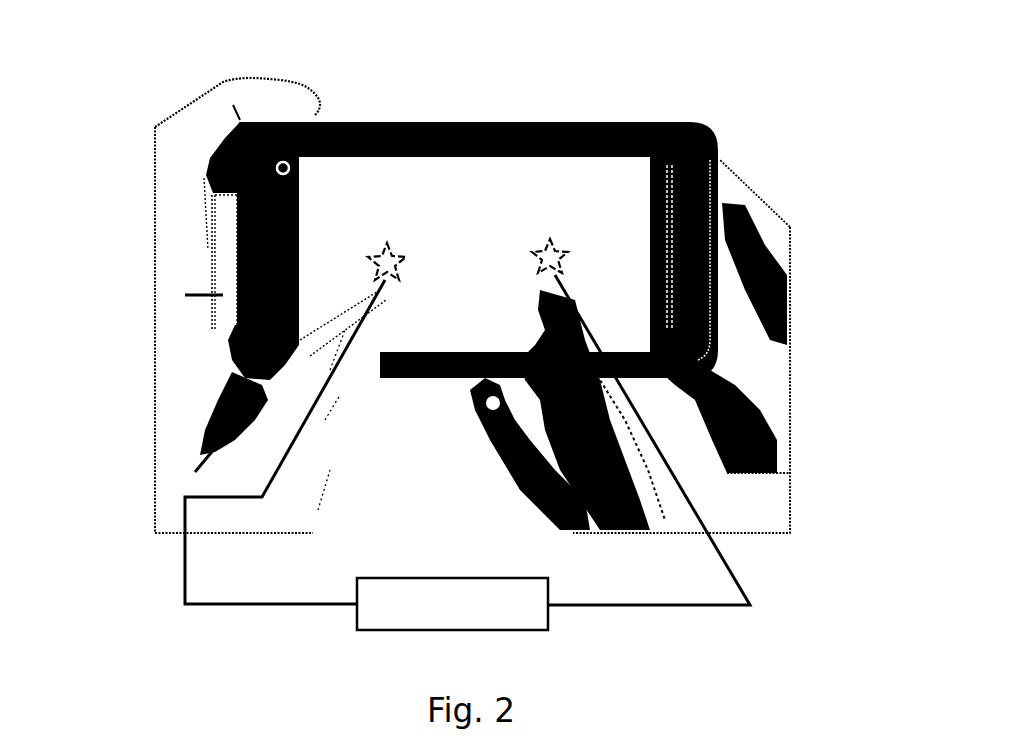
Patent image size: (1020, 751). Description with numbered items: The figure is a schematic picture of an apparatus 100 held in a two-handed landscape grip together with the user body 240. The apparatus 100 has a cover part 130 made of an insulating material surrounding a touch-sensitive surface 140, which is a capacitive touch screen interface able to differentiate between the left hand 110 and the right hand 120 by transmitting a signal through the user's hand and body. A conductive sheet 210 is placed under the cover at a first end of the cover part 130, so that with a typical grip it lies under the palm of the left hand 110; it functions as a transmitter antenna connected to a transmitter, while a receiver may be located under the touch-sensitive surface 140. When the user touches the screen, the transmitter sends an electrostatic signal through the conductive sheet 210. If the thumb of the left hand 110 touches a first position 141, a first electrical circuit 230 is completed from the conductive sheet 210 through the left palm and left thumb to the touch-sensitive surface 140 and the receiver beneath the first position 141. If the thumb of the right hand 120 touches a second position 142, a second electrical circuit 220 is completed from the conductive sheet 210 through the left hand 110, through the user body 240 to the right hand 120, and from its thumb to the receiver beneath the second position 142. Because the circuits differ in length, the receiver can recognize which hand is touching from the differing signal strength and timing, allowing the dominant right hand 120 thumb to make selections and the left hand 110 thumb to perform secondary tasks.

The apparatus 100 is at (818, 88).
The first hand 110 is at (170, 283).
The second hand 120 is at (764, 508).
The cover part 130 is at (527, 120).
The touch-sensitive surface 140 is at (474, 254).
The first position 141 is at (400, 250).
The second position 142 is at (540, 262).
The conductive sheet 210 is at (222, 214).
The second electrical circuit 220 is at (745, 587).
The first electrical circuit 230 is at (292, 447).
The user body 240 is at (400, 578).